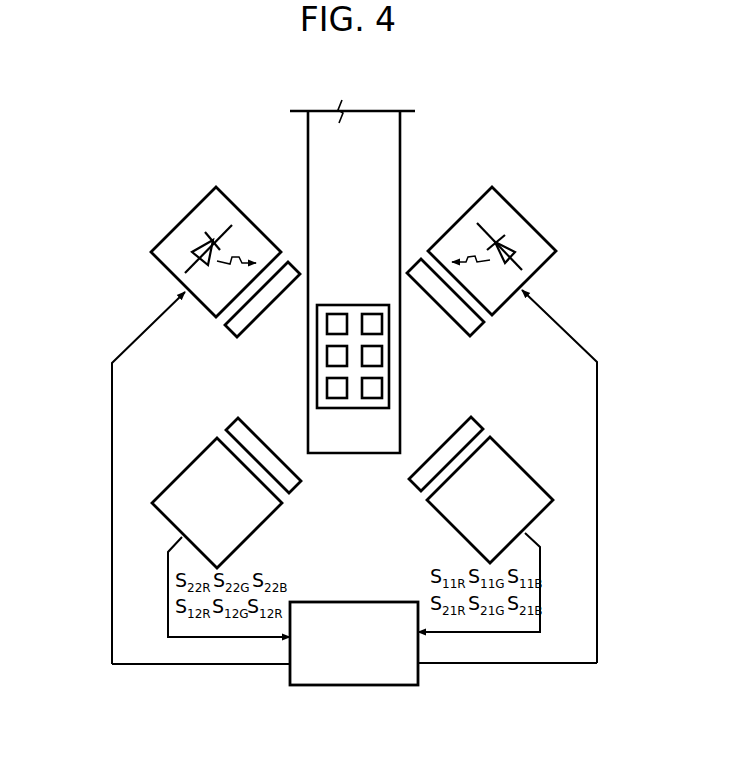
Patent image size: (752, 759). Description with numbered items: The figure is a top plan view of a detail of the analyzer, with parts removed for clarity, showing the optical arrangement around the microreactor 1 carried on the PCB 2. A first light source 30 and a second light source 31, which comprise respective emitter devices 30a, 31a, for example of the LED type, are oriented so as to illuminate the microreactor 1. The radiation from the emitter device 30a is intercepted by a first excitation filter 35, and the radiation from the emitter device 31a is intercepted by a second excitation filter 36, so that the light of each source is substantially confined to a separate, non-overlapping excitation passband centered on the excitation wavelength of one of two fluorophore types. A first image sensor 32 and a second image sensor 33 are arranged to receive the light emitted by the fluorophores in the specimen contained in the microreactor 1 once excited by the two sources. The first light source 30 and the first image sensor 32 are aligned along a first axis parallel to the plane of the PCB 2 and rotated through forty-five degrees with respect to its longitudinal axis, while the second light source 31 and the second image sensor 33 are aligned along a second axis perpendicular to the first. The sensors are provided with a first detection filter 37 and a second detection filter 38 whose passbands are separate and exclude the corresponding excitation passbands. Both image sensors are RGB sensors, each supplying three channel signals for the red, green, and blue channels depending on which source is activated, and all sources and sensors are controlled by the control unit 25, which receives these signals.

The microreactor 1 is at (392, 355).
The PCB 2 is at (313, 167).
The control unit 25 is at (363, 673).
The first light source 30 is at (128, 257).
The emitter device 30a is at (207, 217).
The second light source 31 is at (533, 200).
The emitter device 31a is at (527, 237).
The first image sensor 32 is at (528, 475).
The second image sensor 33 is at (178, 477).
The first excitation filter 35 is at (236, 337).
The second excitation filter 36 is at (468, 328).
The first detection filter 37 is at (471, 422).
The second detection filter 38 is at (231, 423).